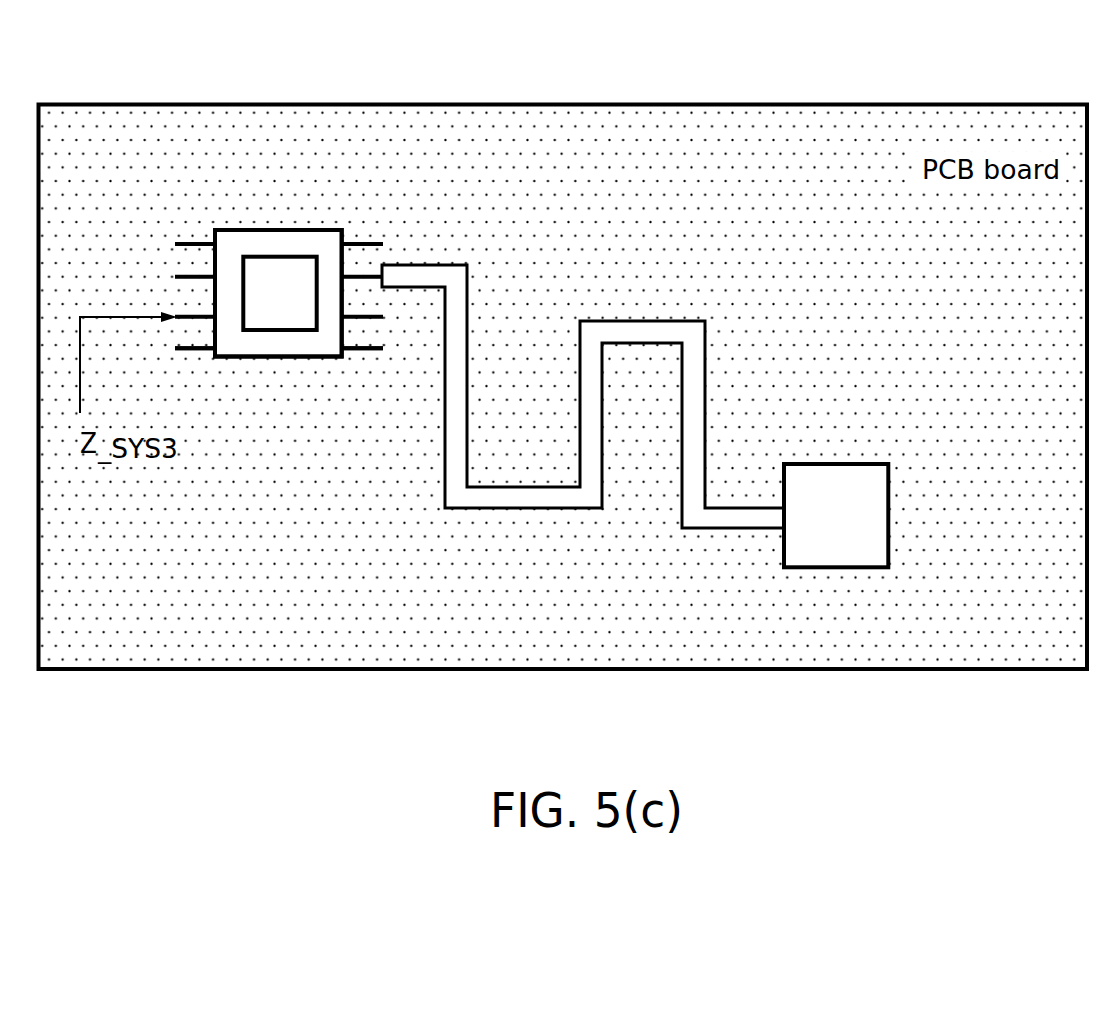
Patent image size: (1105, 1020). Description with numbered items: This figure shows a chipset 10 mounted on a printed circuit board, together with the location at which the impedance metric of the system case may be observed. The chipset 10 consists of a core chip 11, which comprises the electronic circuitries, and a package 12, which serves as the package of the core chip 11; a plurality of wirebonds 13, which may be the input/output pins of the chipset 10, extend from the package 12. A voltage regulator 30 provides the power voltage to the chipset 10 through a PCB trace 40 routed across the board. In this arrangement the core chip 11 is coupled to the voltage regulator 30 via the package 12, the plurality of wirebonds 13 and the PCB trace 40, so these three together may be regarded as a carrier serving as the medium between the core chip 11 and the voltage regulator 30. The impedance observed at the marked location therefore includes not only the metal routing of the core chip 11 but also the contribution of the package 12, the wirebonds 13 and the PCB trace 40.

The chipset 10 is at (211, 225).
The core chip 11 is at (273, 275).
The package 12 is at (329, 255).
The wirebonds 13 is at (343, 358).
The voltage regulator 30 is at (830, 528).
The PCB trace 40 is at (523, 500).